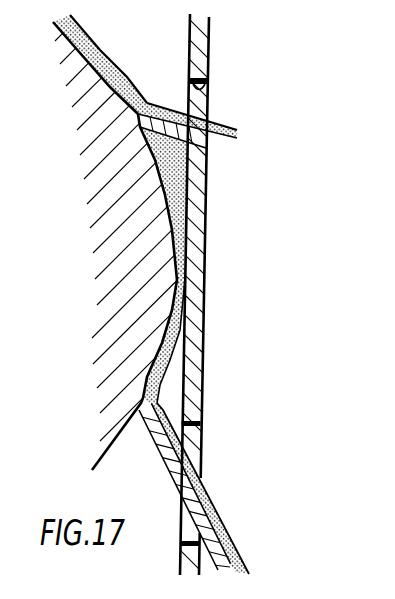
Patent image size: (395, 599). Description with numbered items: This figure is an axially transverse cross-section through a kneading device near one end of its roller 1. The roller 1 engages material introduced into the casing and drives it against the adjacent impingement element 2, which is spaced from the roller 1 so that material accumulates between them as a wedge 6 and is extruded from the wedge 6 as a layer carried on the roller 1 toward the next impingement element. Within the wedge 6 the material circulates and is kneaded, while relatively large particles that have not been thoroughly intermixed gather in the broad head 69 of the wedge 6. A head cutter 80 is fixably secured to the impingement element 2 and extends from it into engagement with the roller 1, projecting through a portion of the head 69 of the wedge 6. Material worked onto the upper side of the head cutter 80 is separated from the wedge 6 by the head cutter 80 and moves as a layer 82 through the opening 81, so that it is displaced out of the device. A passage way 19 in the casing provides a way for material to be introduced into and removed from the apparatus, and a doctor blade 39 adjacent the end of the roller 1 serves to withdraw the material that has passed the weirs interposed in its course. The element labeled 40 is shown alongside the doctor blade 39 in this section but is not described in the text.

The roller 1 is at (122, 210).
The impingement element 2 is at (196, 245).
The wedge 6 is at (186, 169).
The passage way 19 is at (202, 438).
The doctor blade 39 is at (227, 541).
The cement strip 40 is at (212, 500).
The head of the wedge 69 is at (147, 101).
The head cutter 80 is at (212, 147).
The opening 81 is at (207, 89).
The layer 82 is at (229, 128).